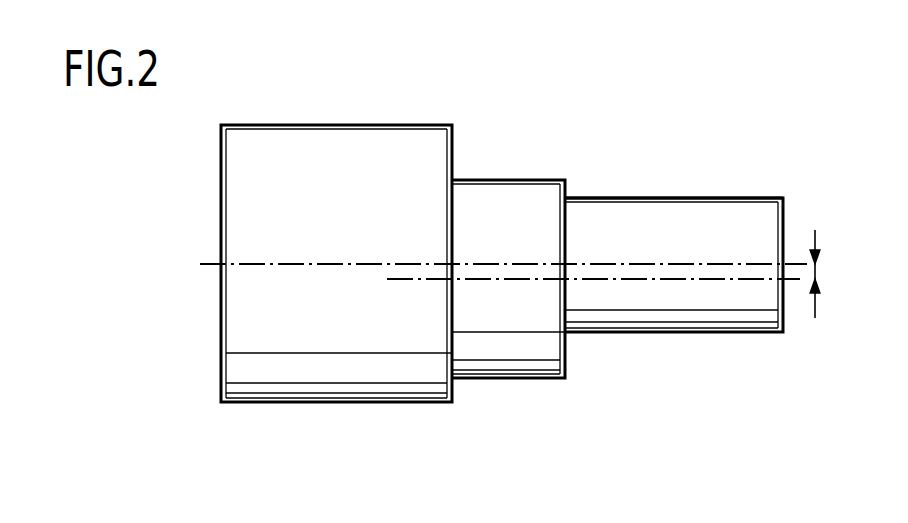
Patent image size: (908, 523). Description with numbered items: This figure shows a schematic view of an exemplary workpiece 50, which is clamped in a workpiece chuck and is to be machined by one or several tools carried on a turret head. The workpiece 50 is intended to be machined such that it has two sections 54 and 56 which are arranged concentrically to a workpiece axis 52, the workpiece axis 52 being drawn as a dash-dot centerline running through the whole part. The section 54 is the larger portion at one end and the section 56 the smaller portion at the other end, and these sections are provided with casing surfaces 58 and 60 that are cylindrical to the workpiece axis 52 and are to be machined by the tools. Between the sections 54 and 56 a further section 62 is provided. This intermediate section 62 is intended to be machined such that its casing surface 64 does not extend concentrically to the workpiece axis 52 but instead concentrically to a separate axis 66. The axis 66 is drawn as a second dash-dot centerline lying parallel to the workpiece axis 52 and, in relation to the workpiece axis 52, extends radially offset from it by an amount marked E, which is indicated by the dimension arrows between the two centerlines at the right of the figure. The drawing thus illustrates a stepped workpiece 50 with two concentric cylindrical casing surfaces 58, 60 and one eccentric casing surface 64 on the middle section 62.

The workpiece 50 is at (576, 150).
The workpiece axis 52 is at (797, 263).
The section 54 is at (330, 352).
The section 56 is at (657, 195).
The casing surface 58 is at (265, 338).
The casing surface 60 is at (730, 216).
The section 62 is at (532, 325).
The casing surface 64 is at (482, 323).
The axis 66 is at (618, 281).